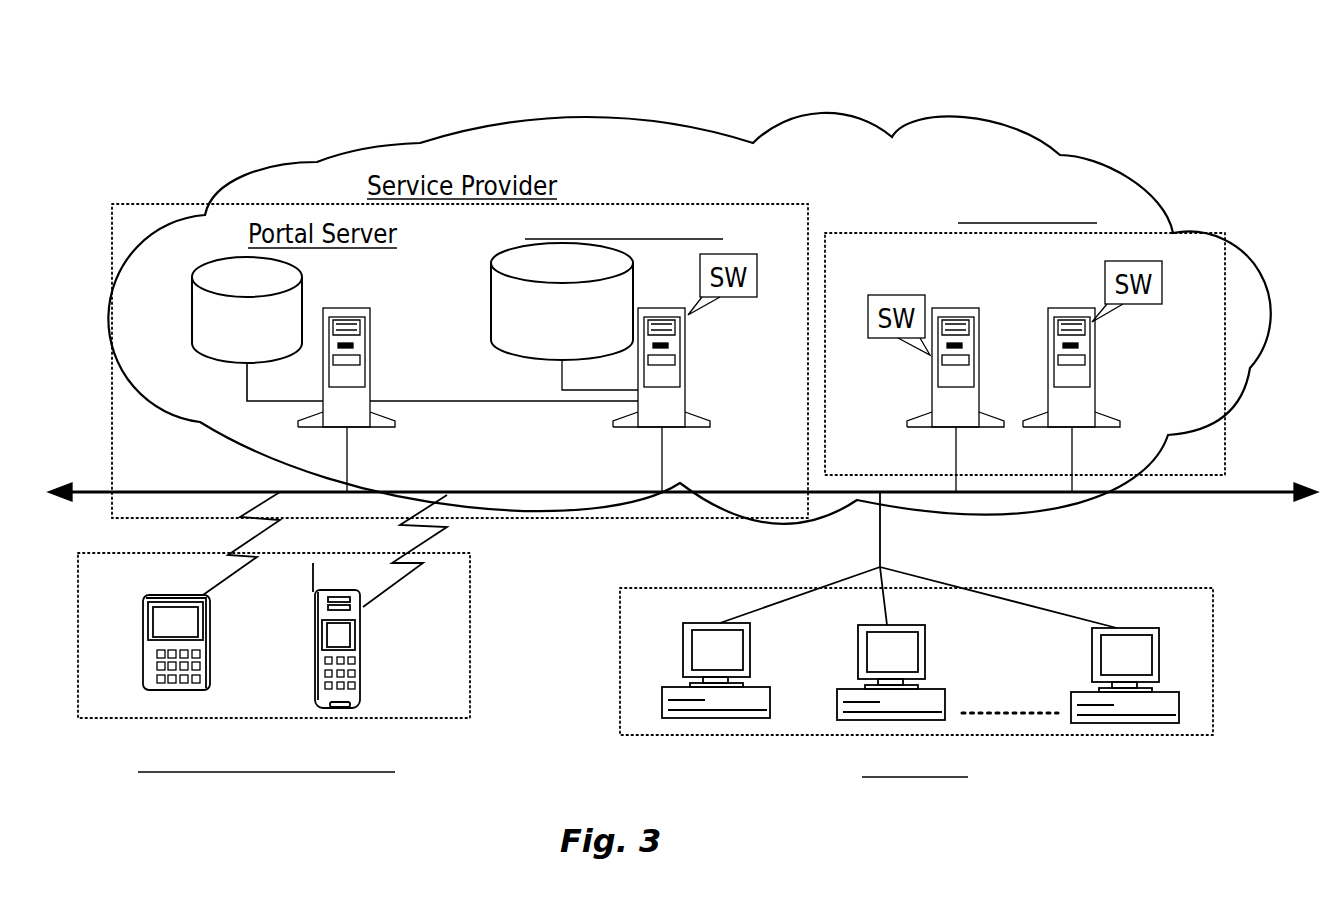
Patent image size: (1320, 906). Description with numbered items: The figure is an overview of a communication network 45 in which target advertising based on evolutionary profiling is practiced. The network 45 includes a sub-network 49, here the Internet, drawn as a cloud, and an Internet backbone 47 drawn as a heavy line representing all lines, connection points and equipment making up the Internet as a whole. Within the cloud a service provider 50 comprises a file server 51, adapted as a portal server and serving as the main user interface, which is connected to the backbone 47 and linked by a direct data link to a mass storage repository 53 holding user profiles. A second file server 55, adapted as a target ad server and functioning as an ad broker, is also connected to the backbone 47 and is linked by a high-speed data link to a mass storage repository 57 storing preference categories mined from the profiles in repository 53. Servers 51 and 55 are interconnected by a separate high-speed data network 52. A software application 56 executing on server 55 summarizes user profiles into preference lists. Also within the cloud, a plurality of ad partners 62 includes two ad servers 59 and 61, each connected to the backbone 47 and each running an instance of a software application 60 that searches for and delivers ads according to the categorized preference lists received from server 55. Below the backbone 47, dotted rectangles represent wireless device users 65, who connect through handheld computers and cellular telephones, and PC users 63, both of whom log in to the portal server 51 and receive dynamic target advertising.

The communication network 45 is at (90, 142).
The Internet backbone 47 is at (128, 490).
The sub-network (Internet) 49 is at (325, 148).
The service provider 50 is at (753, 205).
The file server (portal server) 51 is at (370, 338).
The high-speed data network 52 is at (500, 400).
The mass storage repository 53 is at (192, 312).
The file server (target ad server) 55 is at (685, 398).
The software application 56 is at (757, 284).
The mass storage repository 57 is at (490, 300).
The ad server 59 is at (980, 380).
The software application 60 is at (868, 323).
The ad server 61 is at (1097, 385).
The ad partners 62 is at (935, 228).
The PC users 63 is at (618, 673).
The wireless device users 65 is at (76, 628).